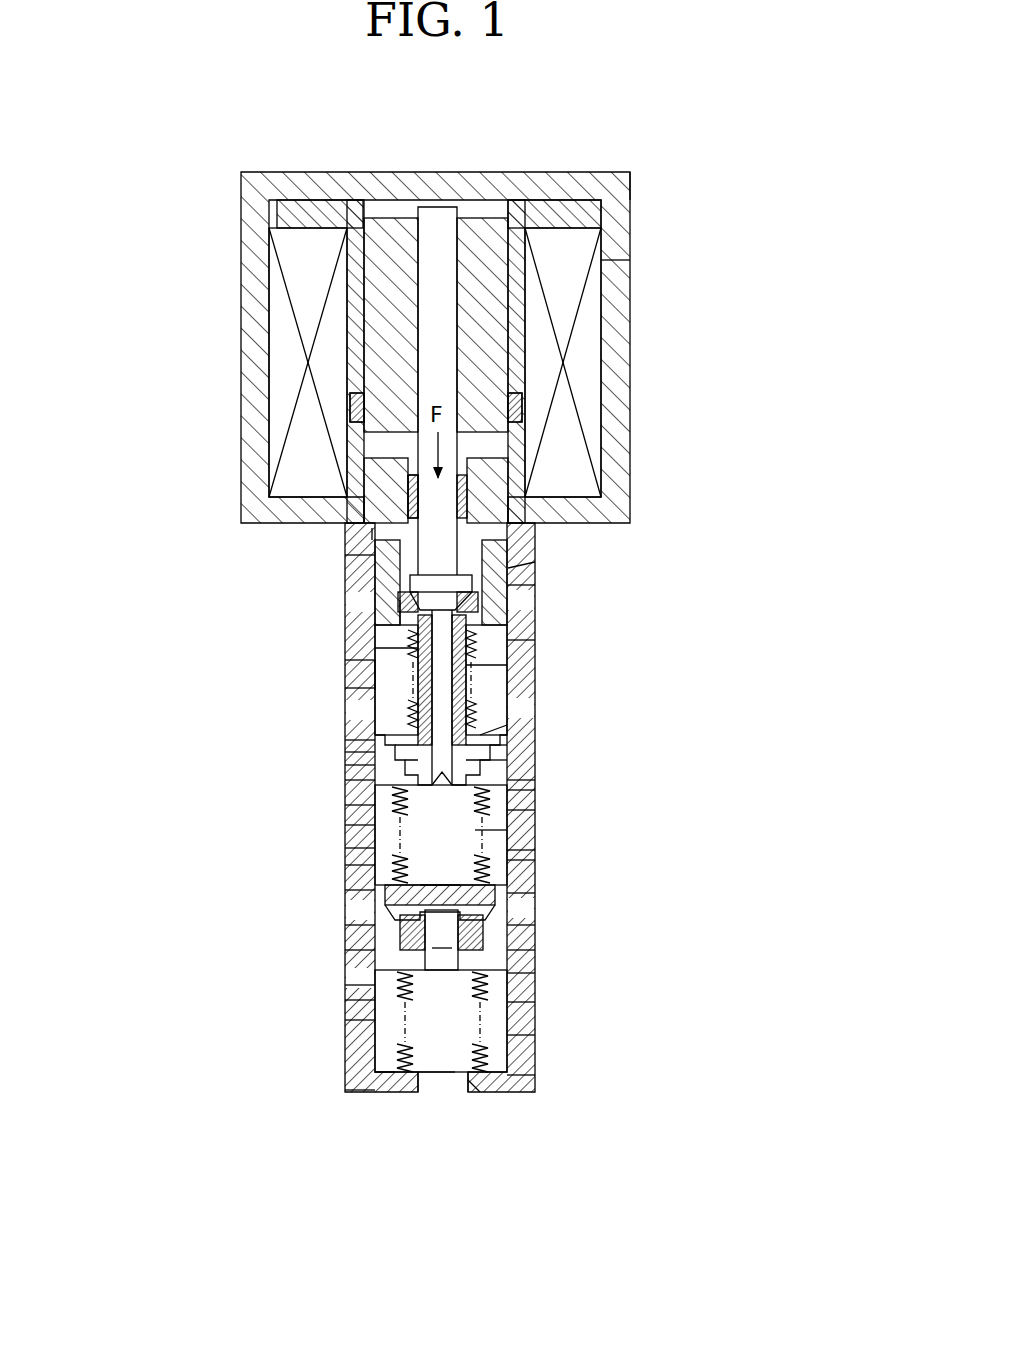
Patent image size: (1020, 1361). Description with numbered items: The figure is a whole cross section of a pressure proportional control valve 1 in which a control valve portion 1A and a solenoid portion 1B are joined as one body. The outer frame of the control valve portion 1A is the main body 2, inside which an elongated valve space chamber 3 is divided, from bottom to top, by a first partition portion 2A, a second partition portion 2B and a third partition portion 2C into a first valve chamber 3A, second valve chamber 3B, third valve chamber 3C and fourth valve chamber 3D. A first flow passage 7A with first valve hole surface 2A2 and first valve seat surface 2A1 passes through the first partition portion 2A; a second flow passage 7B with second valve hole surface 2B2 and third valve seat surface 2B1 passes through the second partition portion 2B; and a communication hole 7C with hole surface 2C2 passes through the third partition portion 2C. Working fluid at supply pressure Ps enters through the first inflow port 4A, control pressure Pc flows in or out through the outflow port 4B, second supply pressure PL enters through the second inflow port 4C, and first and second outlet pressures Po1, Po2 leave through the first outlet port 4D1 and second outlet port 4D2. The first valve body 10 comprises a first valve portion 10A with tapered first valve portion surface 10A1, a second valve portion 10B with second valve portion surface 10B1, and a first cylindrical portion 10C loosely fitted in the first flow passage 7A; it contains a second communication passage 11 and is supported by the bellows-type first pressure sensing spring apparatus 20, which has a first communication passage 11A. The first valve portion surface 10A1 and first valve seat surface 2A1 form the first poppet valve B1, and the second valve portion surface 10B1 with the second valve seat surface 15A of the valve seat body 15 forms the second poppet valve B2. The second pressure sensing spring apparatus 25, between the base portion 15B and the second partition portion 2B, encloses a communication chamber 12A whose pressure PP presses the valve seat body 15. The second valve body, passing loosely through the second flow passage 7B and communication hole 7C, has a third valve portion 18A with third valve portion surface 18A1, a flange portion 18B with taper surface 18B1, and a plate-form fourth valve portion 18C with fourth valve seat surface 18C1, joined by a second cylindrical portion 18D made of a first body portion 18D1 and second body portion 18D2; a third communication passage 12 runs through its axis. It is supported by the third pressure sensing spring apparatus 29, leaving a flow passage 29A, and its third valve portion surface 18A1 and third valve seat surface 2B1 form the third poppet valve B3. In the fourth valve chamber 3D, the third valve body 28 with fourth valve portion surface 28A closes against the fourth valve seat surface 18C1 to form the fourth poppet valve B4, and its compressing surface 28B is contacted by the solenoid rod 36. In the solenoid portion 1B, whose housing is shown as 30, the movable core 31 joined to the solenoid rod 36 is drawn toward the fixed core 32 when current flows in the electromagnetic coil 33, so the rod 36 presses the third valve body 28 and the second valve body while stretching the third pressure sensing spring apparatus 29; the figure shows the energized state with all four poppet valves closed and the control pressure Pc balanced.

The control valve 1 is at (640, 155).
The control valve portion 1A is at (540, 1035).
The solenoid portion 1B is at (632, 272).
The main body 2 is at (518, 1095).
The first partition portion 2A is at (535, 893).
The first valve seat surface 2A1 is at (535, 1075).
The first valve hole surface 2A2 is at (395, 1078).
The second partition portion 2B is at (345, 740).
The third valve seat surface 2B1 is at (345, 765).
The second valve hole surface 2B2 is at (535, 810).
The third partition portion 2C is at (535, 640).
The hole surface 2C2 is at (535, 590).
The valve space chamber 3 is at (455, 1085).
The first valve chamber 3A is at (345, 1090).
The second valve chamber 3B is at (345, 782).
The third valve chamber 3C is at (378, 628).
The fourth valve chamber 3D is at (412, 582).
The first inflow port 4A is at (345, 1000).
The outflow port 4B is at (345, 890).
The second inflow port 4C is at (372, 700).
The first outlet port 4D1 is at (425, 1085).
The second outlet port 4D2 is at (400, 604).
The first flow passage 7A is at (535, 950).
The second flow passage 7B is at (345, 752).
The communication hole 7C is at (535, 665).
The first valve body 10 is at (345, 1040).
The first valve portion 10A is at (345, 1020).
The first valve portion surface 10A1 is at (345, 950).
The second valve portion 10B is at (345, 825).
The second valve portion surface 10B1 is at (345, 865).
The first cylindrical portion 10C is at (345, 925).
The second communication passage 11 is at (441, 940).
The first communication passage 11A is at (478, 1095).
The third communication passage 12 is at (441, 835).
The communication chamber 12A is at (460, 866).
The valve seat body 15 is at (535, 880).
The second valve seat surface 15A is at (535, 830).
The base portion 15B is at (345, 805).
The third valve portion 18A is at (395, 745).
The third valve portion surface 18A1 is at (535, 760).
The flange portion 18B is at (535, 725).
The taper surface 18B1 is at (535, 735).
The fourth valve portion 18C is at (370, 605).
The fourth valve seat surface 18C1 is at (405, 500).
The second cylindrical portion 18D is at (208, 648).
The first body portion 18D1 is at (345, 688).
The second body portion 18D2 is at (345, 660).
The first pressure sensing spring apparatus 20 is at (535, 1002).
The second pressure sensing spring apparatus 25 is at (535, 850).
The third valve body 28 is at (535, 545).
The fourth valve portion surface 28A is at (535, 565).
The compressing surface 28B is at (372, 530).
The third pressure sensing spring apparatus 29 is at (540, 690).
The flow passage 29A is at (345, 648).
The solenoid housing 30 is at (620, 358).
The movable core 31 is at (488, 240).
The fixed core 32 is at (380, 470).
The electromagnetic coil 33 is at (300, 290).
The solenoid rod 36 is at (445, 215).
The first poppet valve B1 is at (345, 985).
The second poppet valve B2 is at (345, 848).
The third poppet valve B3 is at (535, 780).
The fourth poppet valve B4 is at (350, 558).
The first outlet pressure Po1 is at (447, 1095).
The second outlet pressure Po2 is at (345, 603).
The second supply pressure PL is at (168, 978).
The control pressure Pc is at (340, 910).
The supply pressure Ps is at (340, 978).
The increasing and decreasing pressure PP is at (535, 860).